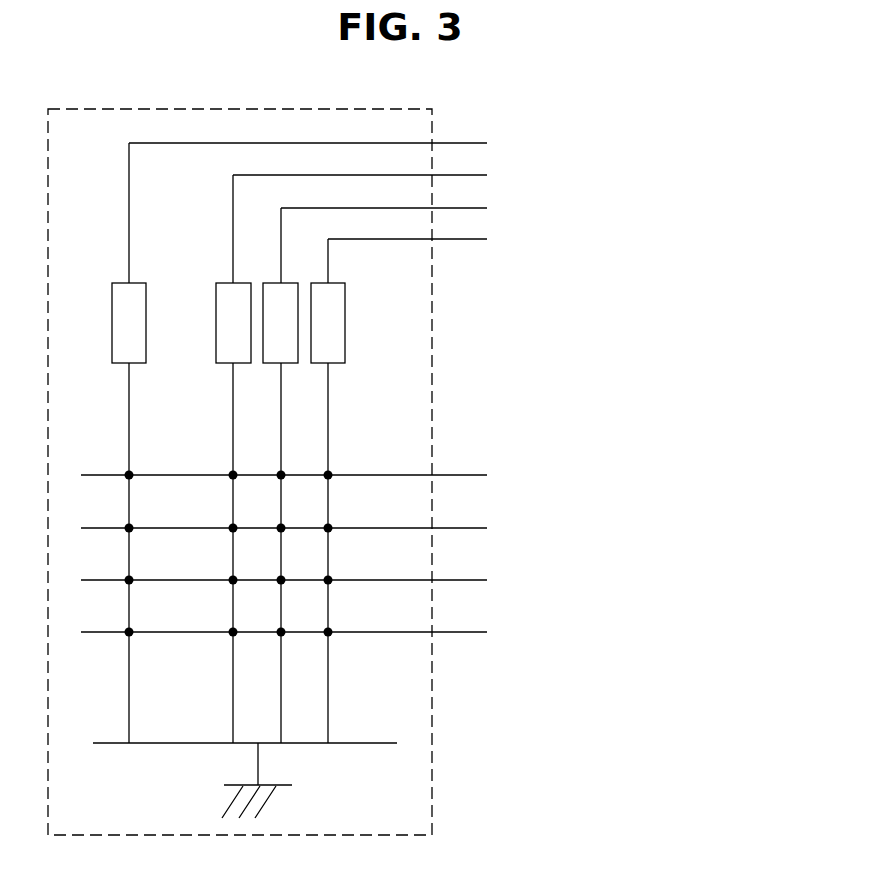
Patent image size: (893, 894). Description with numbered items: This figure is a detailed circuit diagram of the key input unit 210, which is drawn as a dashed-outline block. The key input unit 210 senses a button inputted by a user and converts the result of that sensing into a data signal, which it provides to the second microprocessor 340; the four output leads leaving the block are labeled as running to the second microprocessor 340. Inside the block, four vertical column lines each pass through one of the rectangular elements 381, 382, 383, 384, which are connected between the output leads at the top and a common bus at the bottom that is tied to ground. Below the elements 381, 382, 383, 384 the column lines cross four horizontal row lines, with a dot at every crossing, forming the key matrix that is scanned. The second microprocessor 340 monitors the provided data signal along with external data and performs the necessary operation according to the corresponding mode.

The key input unit 210 is at (433, 403).
The second microprocessor 340 is at (446, 182).
The resistor 381 is at (133, 298).
The resistor 382 is at (220, 344).
The resistor 383 is at (286, 356).
The resistor 384 is at (345, 322).